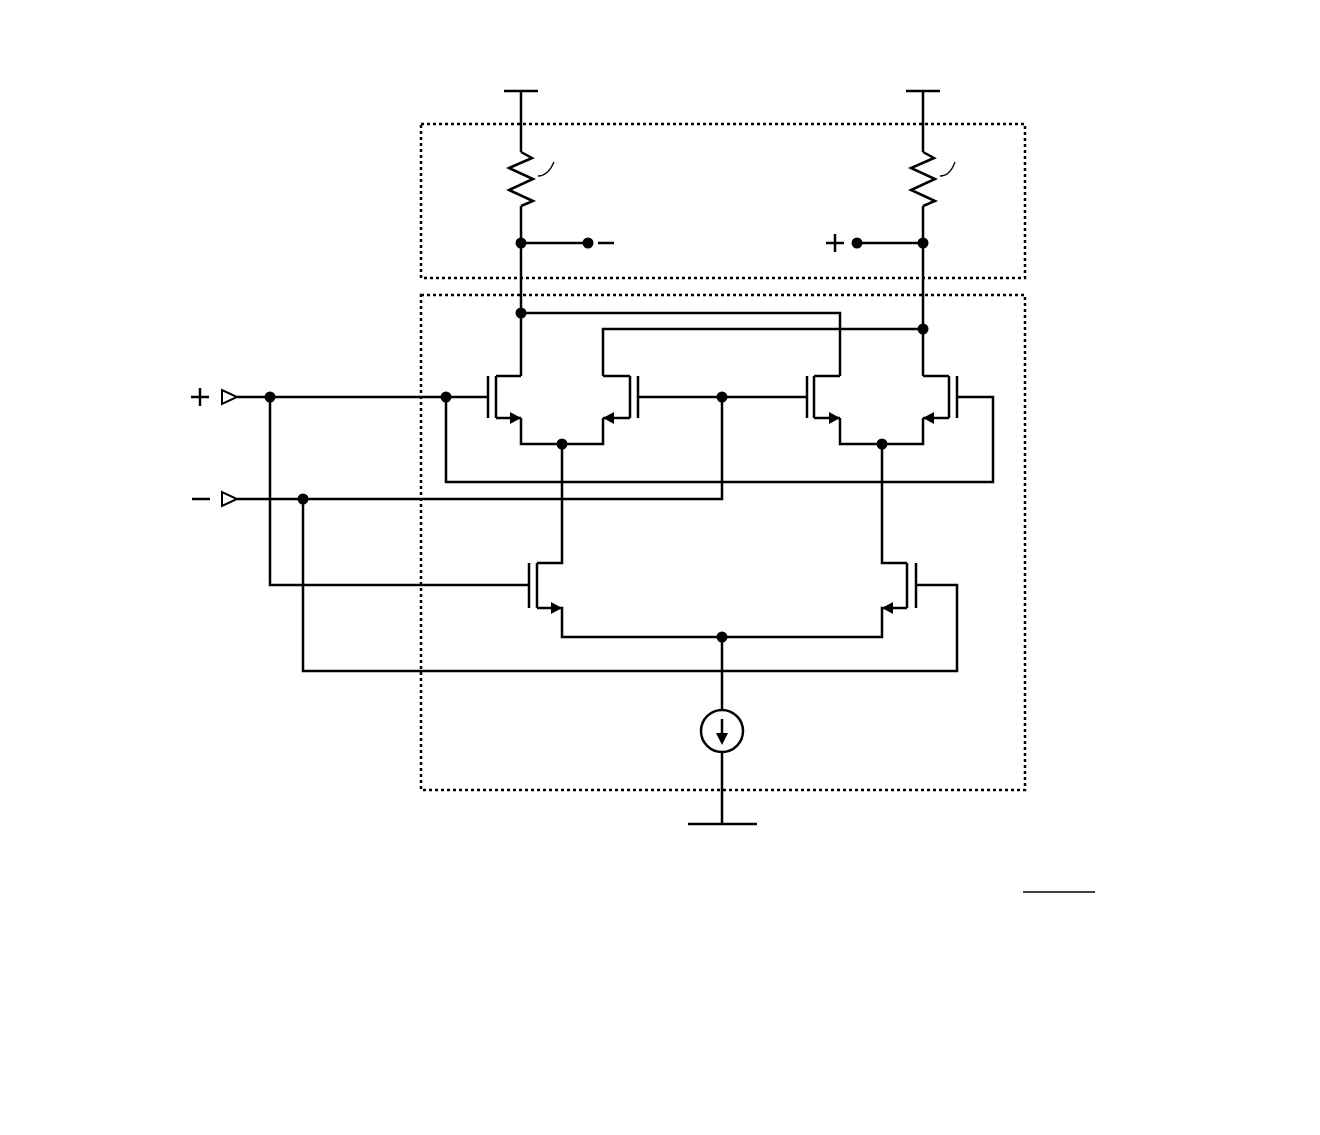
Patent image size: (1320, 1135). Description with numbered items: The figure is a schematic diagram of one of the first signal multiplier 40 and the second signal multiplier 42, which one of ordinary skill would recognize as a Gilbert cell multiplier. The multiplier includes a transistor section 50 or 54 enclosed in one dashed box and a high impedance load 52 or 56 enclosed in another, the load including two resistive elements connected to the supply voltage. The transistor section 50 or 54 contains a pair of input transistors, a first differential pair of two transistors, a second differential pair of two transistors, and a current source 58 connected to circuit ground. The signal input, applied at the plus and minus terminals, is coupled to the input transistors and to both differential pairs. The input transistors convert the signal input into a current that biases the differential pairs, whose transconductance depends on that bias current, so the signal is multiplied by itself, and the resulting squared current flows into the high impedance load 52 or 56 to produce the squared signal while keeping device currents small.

The current source 58 is at (743, 731).
The high impedance load 52 is at (1025, 211).
The high impedance load 56 is at (723, 214).
The transistor section 50 is at (432, 791).
The transistor section 54 is at (577, 578).
The first signal multiplier 40 is at (694, 486).
The second signal multiplier 42 is at (1258, 919).